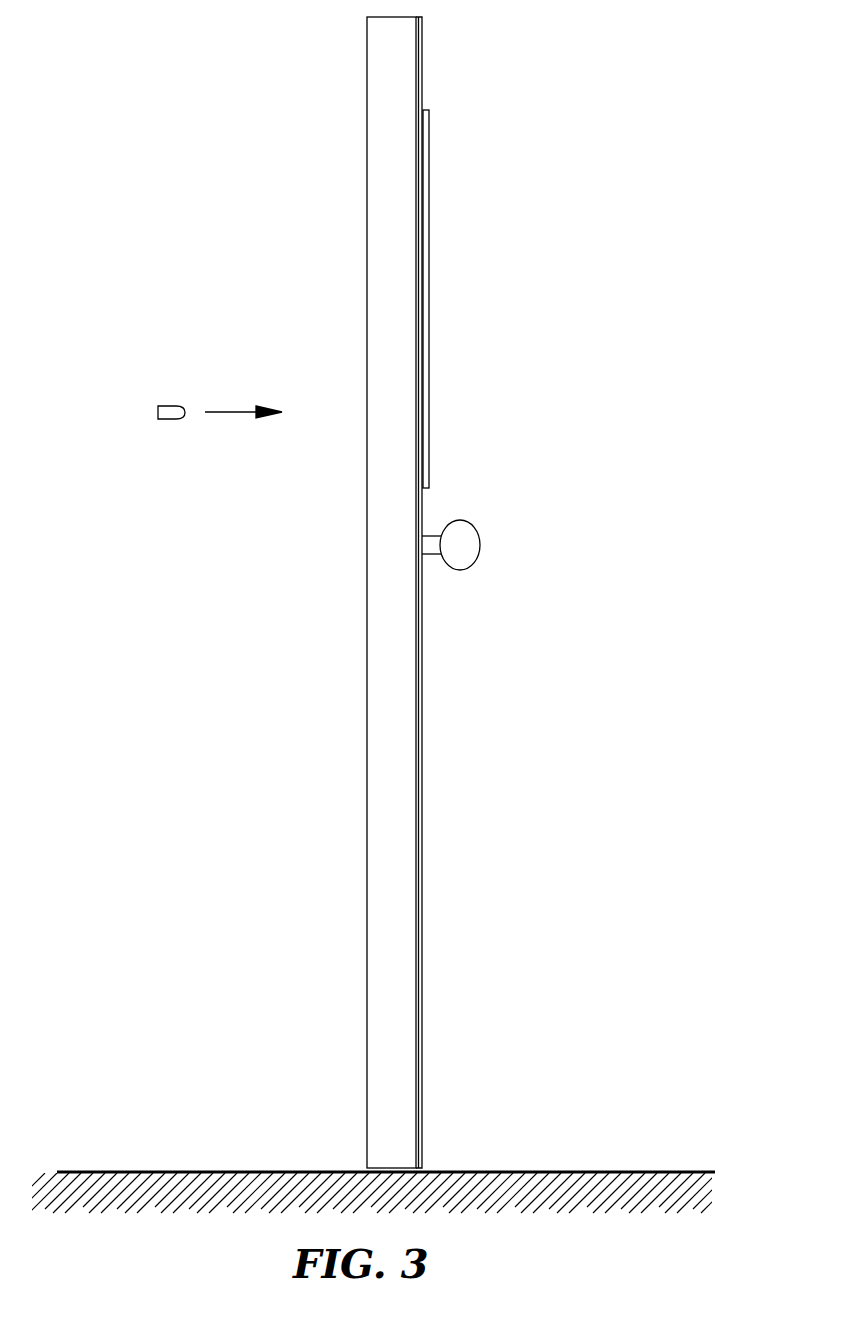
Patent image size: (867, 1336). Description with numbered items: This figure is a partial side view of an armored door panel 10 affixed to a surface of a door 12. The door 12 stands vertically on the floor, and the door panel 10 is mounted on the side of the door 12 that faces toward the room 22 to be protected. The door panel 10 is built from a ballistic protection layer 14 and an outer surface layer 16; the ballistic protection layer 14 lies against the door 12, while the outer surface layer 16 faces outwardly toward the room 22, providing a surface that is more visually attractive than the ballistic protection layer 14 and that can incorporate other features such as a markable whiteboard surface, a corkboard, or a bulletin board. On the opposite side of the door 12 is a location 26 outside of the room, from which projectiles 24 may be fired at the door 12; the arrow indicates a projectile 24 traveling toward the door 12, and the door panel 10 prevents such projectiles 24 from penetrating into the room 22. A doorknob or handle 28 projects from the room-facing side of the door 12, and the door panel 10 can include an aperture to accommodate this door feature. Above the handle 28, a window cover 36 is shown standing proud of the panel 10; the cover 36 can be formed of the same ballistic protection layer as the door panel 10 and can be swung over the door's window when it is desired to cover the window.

The armored door panel 10 is at (580, 115).
The door 12 is at (393, 669).
The ballistic protection layer 14 is at (419, 33).
The outer surface layer 16 is at (422, 77).
The room 22 is at (607, 299).
The projectiles 24 is at (168, 420).
The location outside of the room 26 is at (187, 302).
The doorknob or handle 28 is at (481, 540).
The window cover 36 is at (429, 224).